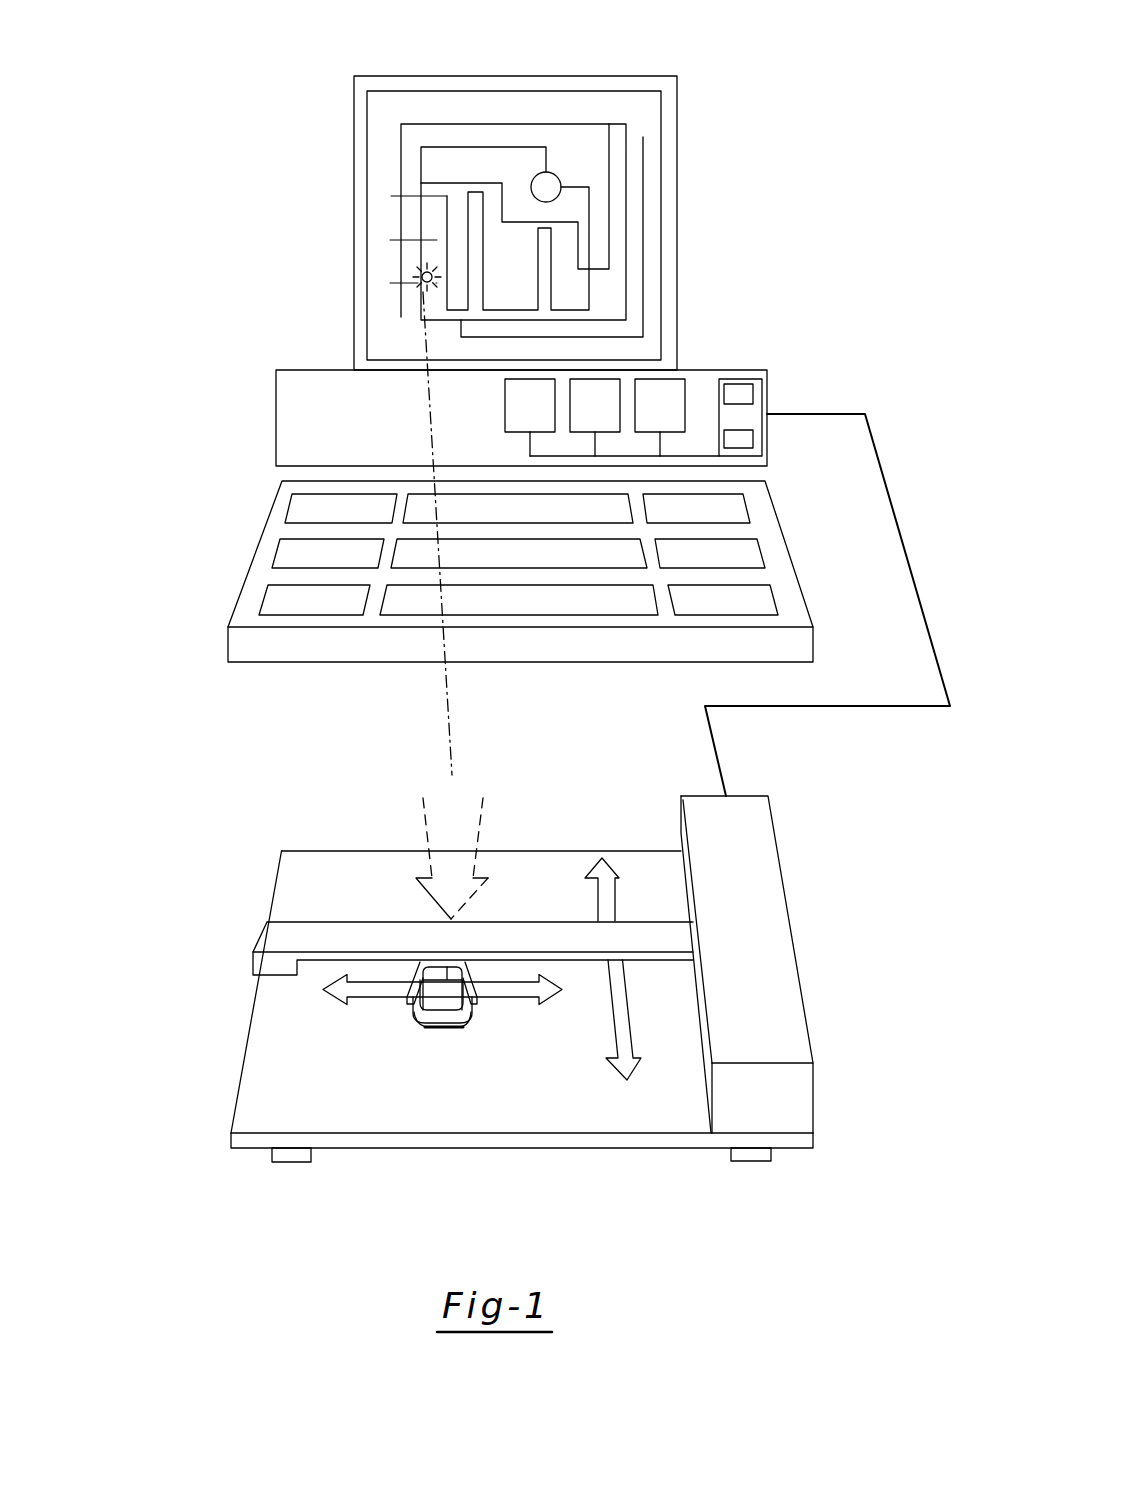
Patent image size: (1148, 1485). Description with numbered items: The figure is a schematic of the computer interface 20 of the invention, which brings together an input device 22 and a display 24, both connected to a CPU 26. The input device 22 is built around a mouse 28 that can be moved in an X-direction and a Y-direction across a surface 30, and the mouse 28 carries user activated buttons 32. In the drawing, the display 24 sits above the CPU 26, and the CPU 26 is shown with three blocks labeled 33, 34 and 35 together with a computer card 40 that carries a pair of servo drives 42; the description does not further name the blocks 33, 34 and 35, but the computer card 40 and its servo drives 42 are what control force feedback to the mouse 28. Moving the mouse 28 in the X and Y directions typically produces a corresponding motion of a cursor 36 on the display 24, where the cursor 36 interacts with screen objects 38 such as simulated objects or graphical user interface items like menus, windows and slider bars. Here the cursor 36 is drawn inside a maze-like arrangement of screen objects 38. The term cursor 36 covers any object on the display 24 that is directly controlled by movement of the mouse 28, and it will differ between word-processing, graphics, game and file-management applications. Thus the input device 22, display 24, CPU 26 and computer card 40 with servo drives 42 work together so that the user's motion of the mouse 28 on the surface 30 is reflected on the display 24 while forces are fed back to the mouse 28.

The computer interface 20 is at (240, 114).
The input device 22 is at (190, 954).
The display 24 is at (680, 188).
The CPU 26 is at (266, 416).
The mouse 28 is at (413, 1027).
The surface 30 is at (256, 1089).
The user activated buttons 32 is at (452, 977).
The host microprocessor 33 is at (520, 421).
The memory 34 is at (585, 421).
The display/audio processor 35 is at (650, 421).
The cursor 36 is at (408, 269).
The screen objects 38 is at (508, 124).
The computer card 40 is at (742, 372).
The servo drives 42 is at (753, 395).